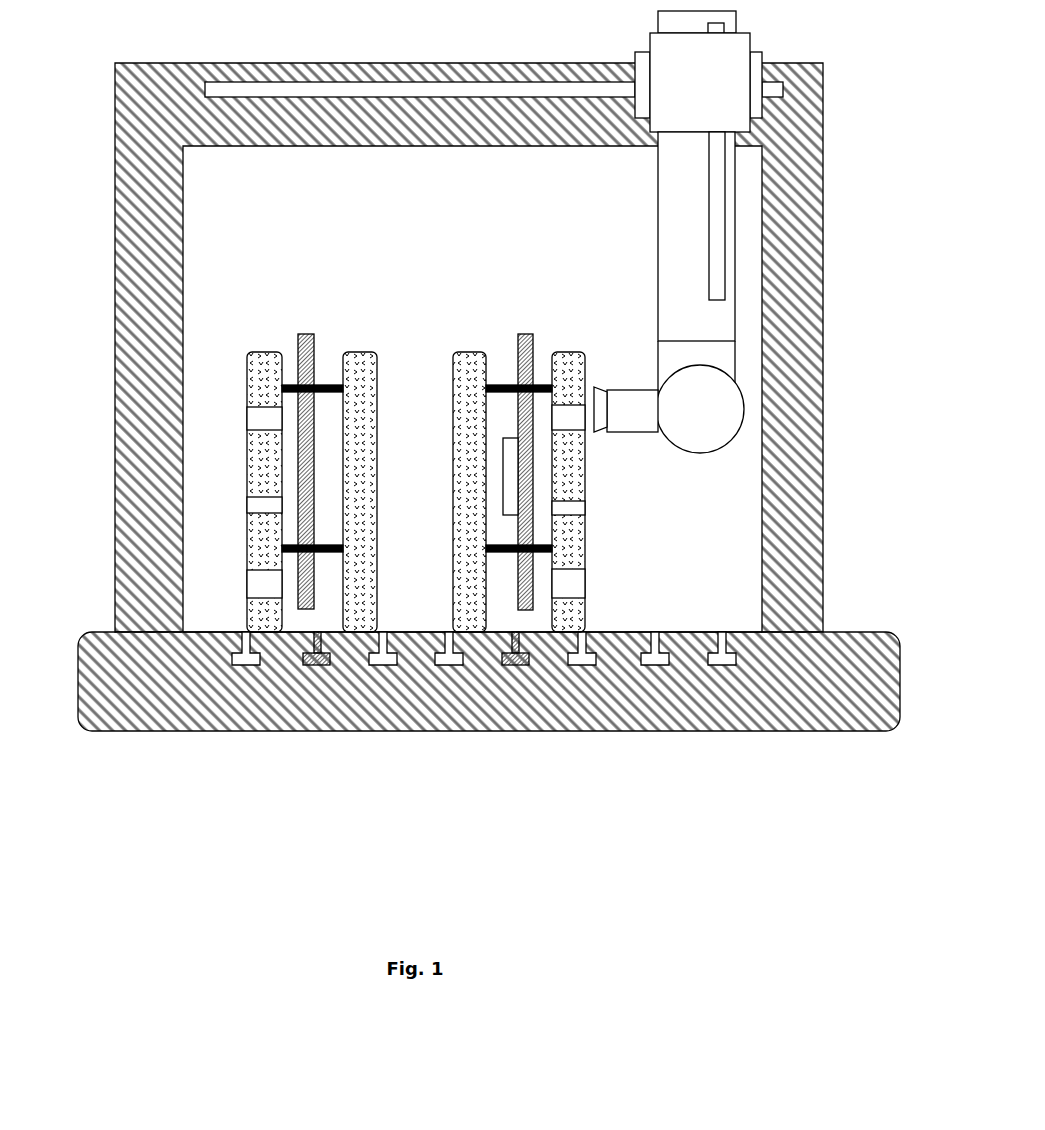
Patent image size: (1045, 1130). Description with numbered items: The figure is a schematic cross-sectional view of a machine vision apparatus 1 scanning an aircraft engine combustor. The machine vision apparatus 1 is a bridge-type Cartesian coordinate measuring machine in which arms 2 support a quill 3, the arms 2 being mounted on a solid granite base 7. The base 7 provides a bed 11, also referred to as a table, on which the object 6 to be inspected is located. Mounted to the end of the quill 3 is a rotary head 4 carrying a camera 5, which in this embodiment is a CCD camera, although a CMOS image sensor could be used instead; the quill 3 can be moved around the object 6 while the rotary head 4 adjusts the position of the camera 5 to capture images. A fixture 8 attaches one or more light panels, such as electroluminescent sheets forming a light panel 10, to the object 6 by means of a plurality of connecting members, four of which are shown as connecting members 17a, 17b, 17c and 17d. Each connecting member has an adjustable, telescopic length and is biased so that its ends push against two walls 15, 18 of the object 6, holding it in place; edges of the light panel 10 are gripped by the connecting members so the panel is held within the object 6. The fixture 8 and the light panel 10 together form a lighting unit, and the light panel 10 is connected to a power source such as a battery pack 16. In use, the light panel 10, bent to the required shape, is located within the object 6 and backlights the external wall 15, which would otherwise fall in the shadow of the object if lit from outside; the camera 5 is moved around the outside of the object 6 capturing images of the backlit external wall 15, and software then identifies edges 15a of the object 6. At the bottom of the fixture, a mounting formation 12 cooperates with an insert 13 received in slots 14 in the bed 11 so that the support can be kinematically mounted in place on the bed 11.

The machine vision apparatus 1 is at (860, 325).
The arms 2 is at (822, 147).
The quill 3 is at (737, 223).
The rotary head 4 is at (737, 413).
The camera 5 is at (605, 432).
The object 6 is at (577, 542).
The base 7 is at (763, 731).
The fixture 8 is at (257, 524).
The light panel 10 is at (299, 513).
The bed 11 is at (690, 632).
The mounting formation 12 is at (308, 635).
The insert 13 is at (320, 667).
The slots 14 is at (455, 667).
The external wall 15 is at (155, 481).
The edges 15a is at (262, 428).
The battery pack 16 is at (502, 438).
The connecting member 17a is at (287, 385).
The connecting member 17b is at (290, 555).
The connecting member 17c is at (545, 385).
The connecting member 17d is at (550, 552).
The wall 18 is at (453, 407).